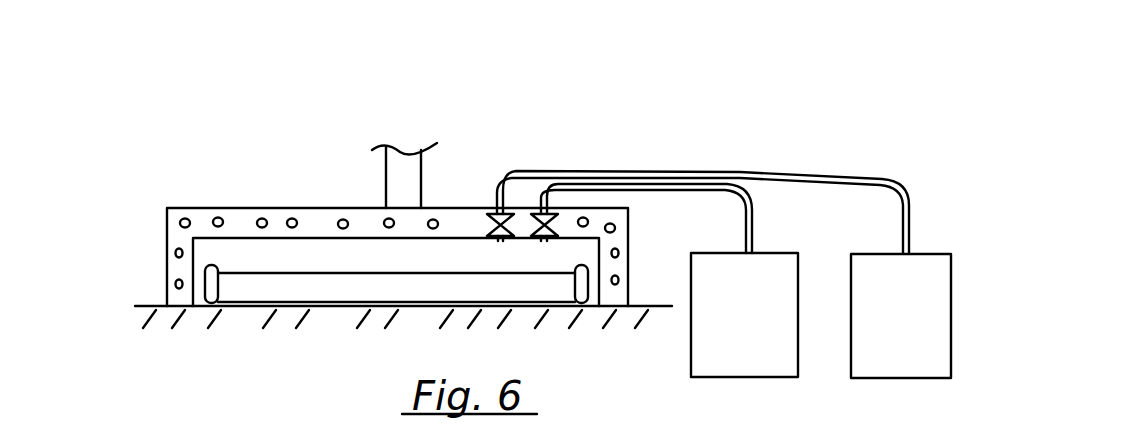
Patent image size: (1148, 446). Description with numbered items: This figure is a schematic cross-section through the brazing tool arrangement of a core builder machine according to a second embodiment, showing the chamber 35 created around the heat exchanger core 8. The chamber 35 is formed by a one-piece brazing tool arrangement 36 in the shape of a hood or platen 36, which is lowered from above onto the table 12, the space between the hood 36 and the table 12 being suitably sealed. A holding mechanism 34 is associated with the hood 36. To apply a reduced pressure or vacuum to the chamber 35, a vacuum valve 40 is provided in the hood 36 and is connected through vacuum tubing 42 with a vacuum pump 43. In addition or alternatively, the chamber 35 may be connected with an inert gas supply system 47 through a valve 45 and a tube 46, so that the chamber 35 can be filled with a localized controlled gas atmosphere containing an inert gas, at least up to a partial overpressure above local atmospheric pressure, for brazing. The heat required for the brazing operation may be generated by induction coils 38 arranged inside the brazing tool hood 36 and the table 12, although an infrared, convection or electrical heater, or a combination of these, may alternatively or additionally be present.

The heat exchanger core 8 is at (267, 290).
The table/machine bed 12 is at (160, 325).
The holding mechanism 34 is at (378, 178).
The chamber 35 is at (243, 255).
The brazing tool arrangement/hood 36 is at (167, 241).
The induction coils 38 is at (290, 222).
The vacuum valve 40 is at (502, 213).
The vacuum tubing 42 is at (580, 175).
The vacuum pump system 43 is at (901, 316).
The inert gas valve 45 is at (537, 212).
The tubing 46 is at (755, 217).
The inert gas supply system 47 is at (744, 315).